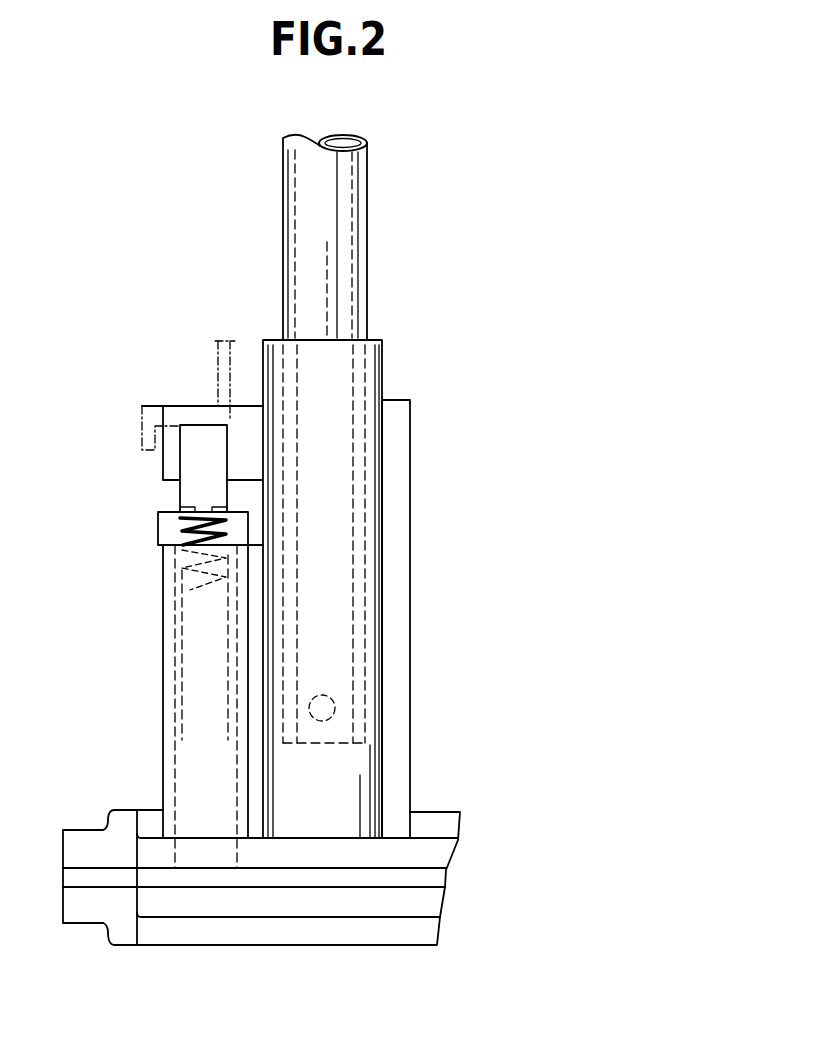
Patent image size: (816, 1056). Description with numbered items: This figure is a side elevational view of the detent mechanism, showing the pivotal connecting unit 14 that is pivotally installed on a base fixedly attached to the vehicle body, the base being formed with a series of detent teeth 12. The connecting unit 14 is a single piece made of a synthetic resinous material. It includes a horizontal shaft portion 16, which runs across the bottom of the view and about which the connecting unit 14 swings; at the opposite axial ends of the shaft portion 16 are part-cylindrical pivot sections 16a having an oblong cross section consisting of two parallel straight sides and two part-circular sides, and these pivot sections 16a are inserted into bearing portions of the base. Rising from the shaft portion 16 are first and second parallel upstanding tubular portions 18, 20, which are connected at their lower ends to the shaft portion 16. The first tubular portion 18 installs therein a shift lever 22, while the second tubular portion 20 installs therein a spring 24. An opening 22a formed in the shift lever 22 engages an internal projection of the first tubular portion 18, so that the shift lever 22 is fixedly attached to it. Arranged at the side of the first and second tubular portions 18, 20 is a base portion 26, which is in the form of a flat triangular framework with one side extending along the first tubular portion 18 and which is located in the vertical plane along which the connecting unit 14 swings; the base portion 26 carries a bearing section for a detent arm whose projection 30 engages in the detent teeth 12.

The detent teeth 12 is at (147, 404).
The pivotal connecting unit 14 is at (158, 677).
The horizontal shaft portion 16 is at (322, 946).
The part-cylindrical pivot sections 16a is at (94, 907).
The first upstanding tubular portion 18 is at (376, 357).
The second upstanding tubular portion 20 is at (163, 605).
The shift lever 22 is at (368, 208).
The opening 22a is at (335, 708).
The spring 24 is at (158, 528).
The base portion 26 is at (395, 483).
The projection 30 is at (193, 423).